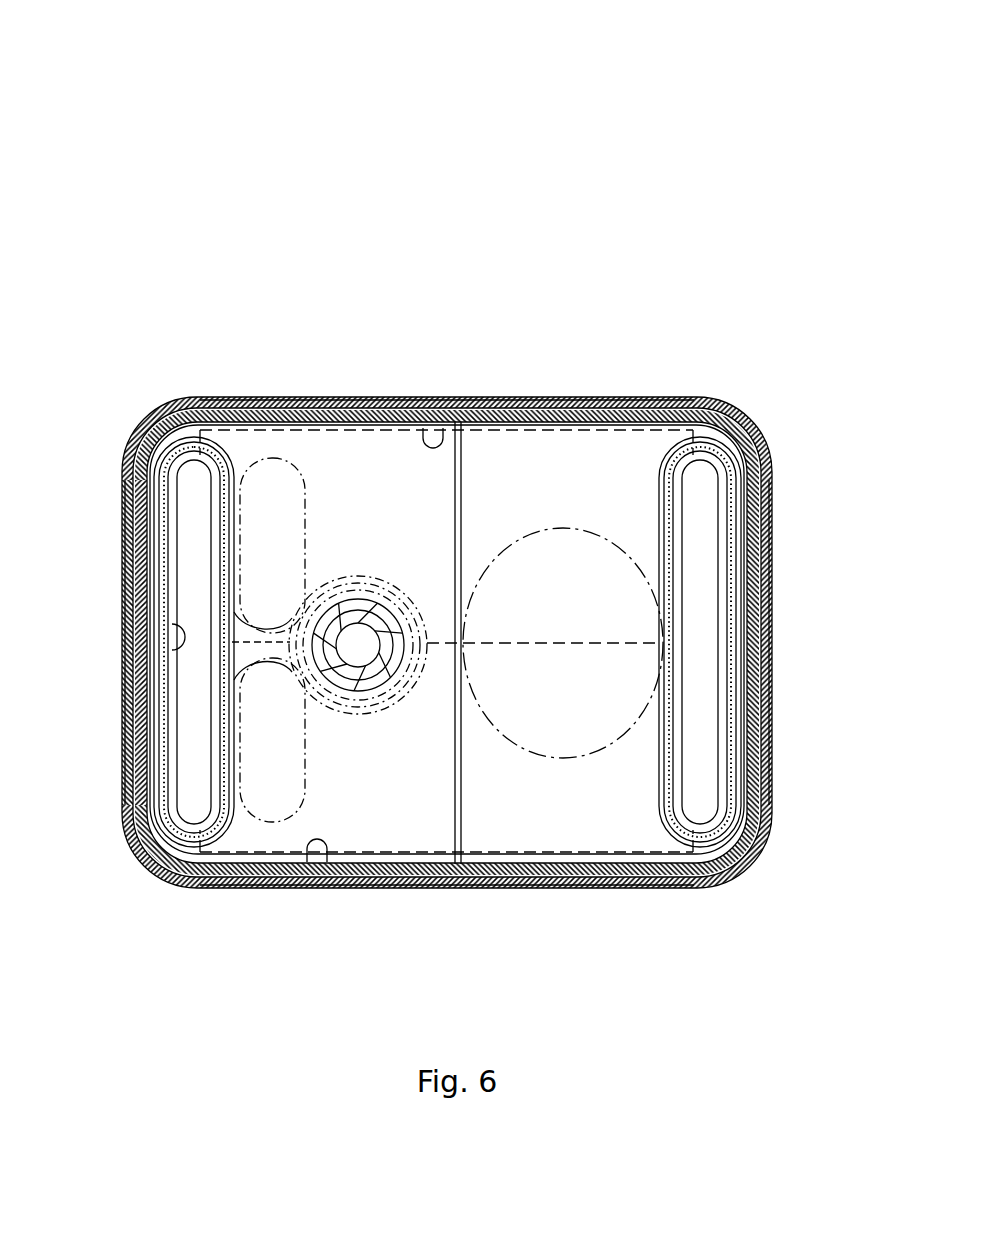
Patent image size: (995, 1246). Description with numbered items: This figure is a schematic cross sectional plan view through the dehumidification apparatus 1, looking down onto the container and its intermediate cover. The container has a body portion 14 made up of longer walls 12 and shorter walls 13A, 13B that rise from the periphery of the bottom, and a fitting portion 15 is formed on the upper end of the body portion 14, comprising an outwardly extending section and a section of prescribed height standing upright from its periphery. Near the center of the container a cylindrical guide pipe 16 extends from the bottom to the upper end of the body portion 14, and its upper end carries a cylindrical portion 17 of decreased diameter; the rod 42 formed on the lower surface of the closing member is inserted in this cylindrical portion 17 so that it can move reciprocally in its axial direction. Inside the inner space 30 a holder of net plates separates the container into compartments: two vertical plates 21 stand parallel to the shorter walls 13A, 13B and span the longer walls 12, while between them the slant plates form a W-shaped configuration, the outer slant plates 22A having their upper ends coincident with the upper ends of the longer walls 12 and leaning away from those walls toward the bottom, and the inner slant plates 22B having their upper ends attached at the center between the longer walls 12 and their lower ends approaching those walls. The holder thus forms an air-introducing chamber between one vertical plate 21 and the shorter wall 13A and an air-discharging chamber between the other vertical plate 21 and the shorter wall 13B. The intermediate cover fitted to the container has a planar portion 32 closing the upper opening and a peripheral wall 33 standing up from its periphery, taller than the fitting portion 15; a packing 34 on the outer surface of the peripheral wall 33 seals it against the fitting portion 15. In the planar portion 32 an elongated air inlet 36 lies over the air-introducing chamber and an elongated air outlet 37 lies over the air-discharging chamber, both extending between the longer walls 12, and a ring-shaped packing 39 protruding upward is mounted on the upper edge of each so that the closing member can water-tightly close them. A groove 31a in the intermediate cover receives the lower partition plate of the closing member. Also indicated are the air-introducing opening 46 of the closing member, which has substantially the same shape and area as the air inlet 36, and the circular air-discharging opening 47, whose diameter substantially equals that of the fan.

The dehumidification apparatus 1 is at (640, 123).
The body portion 14 is at (654, 253).
The longer walls 12 is at (570, 398).
The shorter wall 13A is at (123, 735).
The shorter wall 13B is at (772, 745).
The fitting portion 15 is at (770, 463).
The guide pipe 16 is at (402, 592).
The cylindrical portion 17 is at (368, 621).
The vertical plates 21 is at (439, 642).
The outer slant plates 22A is at (433, 432).
The inner slant plates 22B is at (613, 643).
The inner space 30 is at (620, 822).
The groove 31a is at (458, 838).
The planar portion 32 is at (508, 450).
The peripheral wall 33 is at (728, 420).
The packing 34 is at (750, 443).
The air inlet 36 is at (172, 643).
The air outlet 37 is at (705, 700).
The ring-shaped packing 39 is at (158, 566).
The rod 42 is at (368, 692).
The air-introducing opening 46 is at (273, 468).
The air-discharging opening 47 is at (564, 740).